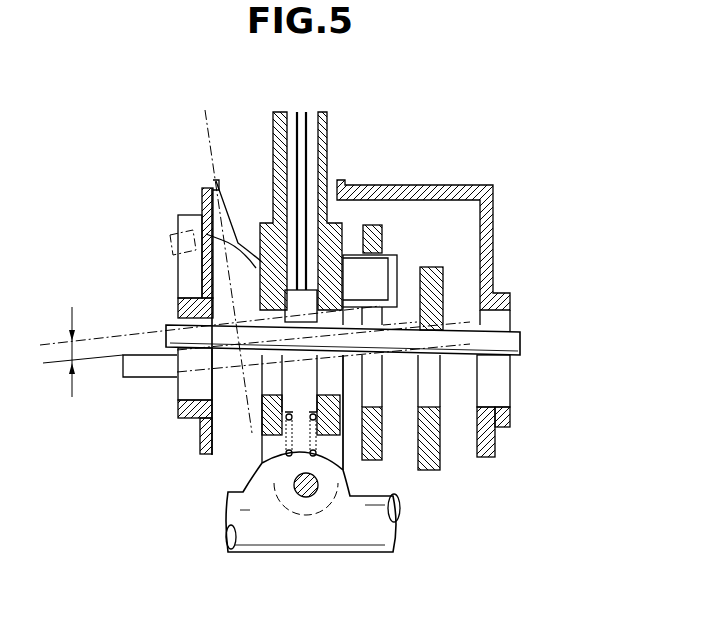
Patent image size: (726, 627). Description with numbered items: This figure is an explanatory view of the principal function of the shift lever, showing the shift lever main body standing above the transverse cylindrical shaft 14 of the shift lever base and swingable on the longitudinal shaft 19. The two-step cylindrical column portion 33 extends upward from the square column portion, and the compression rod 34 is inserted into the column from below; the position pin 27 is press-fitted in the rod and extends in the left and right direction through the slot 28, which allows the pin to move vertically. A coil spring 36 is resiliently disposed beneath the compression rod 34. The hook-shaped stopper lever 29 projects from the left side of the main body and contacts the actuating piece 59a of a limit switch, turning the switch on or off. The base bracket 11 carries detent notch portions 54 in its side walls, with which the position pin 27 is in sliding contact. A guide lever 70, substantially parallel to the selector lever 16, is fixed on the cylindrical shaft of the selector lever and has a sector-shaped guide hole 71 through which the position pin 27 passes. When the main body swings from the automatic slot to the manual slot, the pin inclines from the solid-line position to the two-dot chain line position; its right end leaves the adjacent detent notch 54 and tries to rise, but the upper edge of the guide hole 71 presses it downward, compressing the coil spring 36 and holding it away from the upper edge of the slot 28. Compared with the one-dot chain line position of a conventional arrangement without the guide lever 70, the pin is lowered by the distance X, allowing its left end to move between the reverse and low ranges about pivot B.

The two-step cylindrical column portion 33 is at (208, 128).
The compression rod 34 is at (298, 136).
The hook-shaped stopper lever 29 is at (190, 222).
The actuating piece 59a is at (178, 245).
The detent notch portion 54 is at (192, 383).
The selector lever 16 is at (373, 226).
The guide lever 70 is at (431, 266).
The guide hole 71 is at (430, 378).
The base bracket 11 is at (494, 292).
The pivot point B is at (452, 305).
The position pin 27 is at (522, 340).
The distance X is at (62, 352).
The slot 28 is at (263, 378).
The coil spring 36 is at (285, 452).
The transverse cylindrical shaft 14 is at (348, 532).
The longitudinal shaft 19 is at (312, 496).